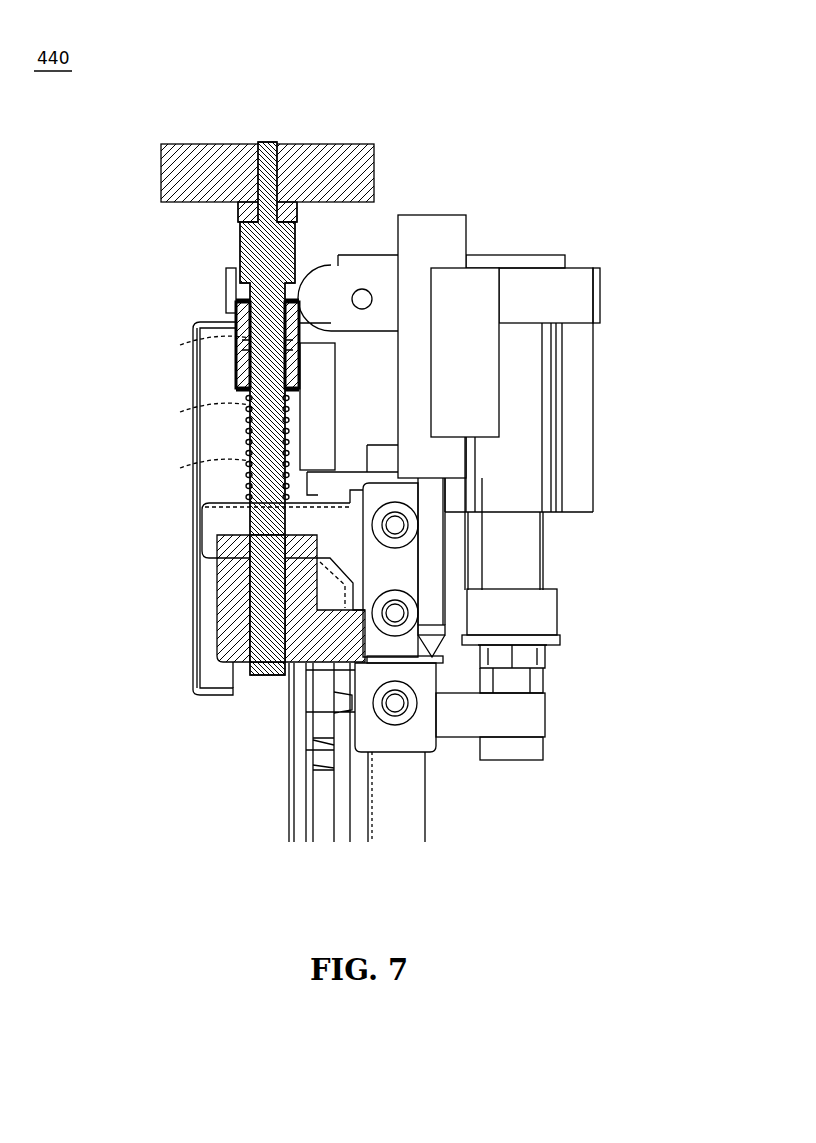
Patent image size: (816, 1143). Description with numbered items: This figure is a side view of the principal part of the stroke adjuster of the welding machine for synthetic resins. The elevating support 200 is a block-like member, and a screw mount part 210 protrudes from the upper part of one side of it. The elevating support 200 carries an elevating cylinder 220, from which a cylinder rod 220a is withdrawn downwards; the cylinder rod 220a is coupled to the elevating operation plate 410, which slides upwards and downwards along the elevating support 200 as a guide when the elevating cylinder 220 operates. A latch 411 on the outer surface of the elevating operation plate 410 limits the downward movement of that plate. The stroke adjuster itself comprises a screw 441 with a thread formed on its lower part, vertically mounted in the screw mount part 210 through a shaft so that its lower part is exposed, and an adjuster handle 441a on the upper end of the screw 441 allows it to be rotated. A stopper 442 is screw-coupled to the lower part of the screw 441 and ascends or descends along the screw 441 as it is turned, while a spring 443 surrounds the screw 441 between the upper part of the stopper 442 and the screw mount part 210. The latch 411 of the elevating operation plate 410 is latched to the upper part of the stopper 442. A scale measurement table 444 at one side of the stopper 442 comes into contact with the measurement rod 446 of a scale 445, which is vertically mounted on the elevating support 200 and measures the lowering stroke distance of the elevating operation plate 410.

The adjuster handle 441a is at (330, 145).
The screw 441 is at (238, 405).
The spring 443 is at (237, 458).
The screw mount part 210 is at (235, 340).
The elevating support 200 is at (530, 270).
The scale 445 is at (440, 222).
The elevating cylinder 220 is at (558, 410).
The cylinder rod 220a is at (520, 617).
The measurement rod 446 is at (430, 557).
The scale measurement table 444 is at (385, 653).
The latch 411 is at (212, 520).
The stopper 442 is at (226, 581).
The elevating operation plate 410 is at (418, 738).